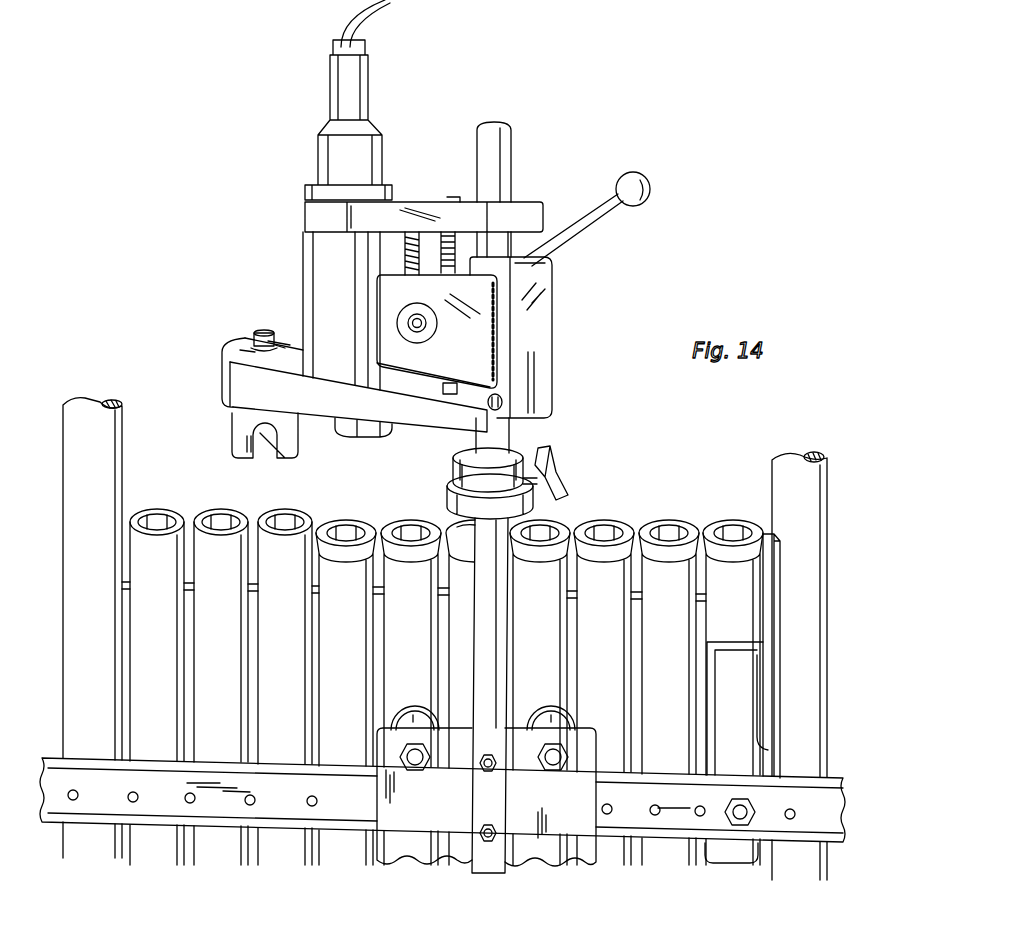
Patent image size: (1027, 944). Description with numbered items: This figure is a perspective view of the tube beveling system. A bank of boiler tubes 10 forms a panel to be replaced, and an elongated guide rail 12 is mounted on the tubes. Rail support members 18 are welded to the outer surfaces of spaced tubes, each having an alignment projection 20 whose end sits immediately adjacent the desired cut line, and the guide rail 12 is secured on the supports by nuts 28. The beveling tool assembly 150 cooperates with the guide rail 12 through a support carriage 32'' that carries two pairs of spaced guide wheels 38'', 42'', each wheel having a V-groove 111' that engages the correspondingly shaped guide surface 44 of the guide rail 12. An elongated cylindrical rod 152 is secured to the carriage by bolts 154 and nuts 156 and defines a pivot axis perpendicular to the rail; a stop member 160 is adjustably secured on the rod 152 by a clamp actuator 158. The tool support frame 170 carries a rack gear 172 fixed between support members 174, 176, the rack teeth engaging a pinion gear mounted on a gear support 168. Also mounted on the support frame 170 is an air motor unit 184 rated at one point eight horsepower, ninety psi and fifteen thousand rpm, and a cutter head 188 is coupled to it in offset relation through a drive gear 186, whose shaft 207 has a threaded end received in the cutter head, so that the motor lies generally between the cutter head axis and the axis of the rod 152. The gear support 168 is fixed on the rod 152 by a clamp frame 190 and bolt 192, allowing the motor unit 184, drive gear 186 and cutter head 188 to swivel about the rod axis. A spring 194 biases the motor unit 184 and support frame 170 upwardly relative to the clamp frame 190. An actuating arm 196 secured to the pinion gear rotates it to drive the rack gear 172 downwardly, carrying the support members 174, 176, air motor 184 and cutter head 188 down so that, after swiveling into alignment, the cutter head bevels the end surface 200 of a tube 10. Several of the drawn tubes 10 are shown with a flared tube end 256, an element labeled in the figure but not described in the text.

The boiler tubes 10 is at (830, 670).
The guide rail 12 is at (88, 794).
The rail support member 18 is at (724, 726).
The alignment projection 20 is at (782, 592).
The nuts 28 is at (757, 808).
The support carriage 32'' is at (486, 797).
The guide wheels 38'' is at (549, 695).
The guide wheels 42'' is at (415, 695).
The guide surface 44 is at (92, 760).
The V-groove 111' is at (468, 703).
The beveling tool assembly 150 is at (268, 240).
The cylindrical rod 152 is at (513, 162).
The bolts 154 is at (496, 767).
The nuts 156 is at (480, 766).
The clamp actuator 158 is at (550, 453).
The stop member 160 is at (447, 495).
The gear support 168 is at (482, 363).
The tool support frame 170 is at (553, 198).
The rack gear 172 is at (445, 200).
The support member 174 is at (408, 201).
The support member 176 is at (423, 422).
The air motor unit 184 is at (330, 294).
The drive gear 186 is at (222, 390).
The cutter head 188 is at (233, 432).
The clamp frame 190 is at (553, 293).
The bolt 192 is at (503, 400).
The spring 194 is at (405, 253).
The actuating arm 196 is at (600, 223).
The end surface 200 is at (283, 514).
The shaft 207 is at (257, 337).
The flanged tube 256 is at (368, 538).